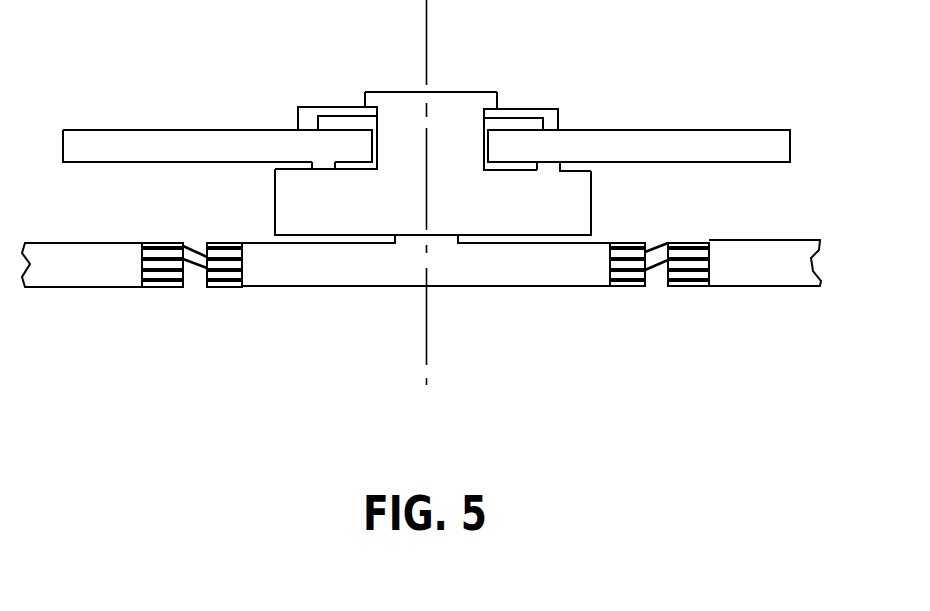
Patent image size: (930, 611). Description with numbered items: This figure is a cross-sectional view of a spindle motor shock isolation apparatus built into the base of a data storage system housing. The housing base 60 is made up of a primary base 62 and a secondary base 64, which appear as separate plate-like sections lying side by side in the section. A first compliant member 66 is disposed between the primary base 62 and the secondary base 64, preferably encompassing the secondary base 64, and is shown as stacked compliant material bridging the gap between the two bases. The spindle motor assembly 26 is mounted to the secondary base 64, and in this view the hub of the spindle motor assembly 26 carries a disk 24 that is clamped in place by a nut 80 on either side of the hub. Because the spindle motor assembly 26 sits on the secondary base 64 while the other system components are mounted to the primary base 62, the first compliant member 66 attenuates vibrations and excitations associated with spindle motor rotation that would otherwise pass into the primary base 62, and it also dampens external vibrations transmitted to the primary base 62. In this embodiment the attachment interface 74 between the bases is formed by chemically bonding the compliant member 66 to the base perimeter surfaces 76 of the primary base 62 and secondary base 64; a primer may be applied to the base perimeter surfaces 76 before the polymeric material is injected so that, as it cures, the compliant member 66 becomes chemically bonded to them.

The disk 24 is at (120, 129).
The spindle motor assembly 26 is at (477, 92).
The clamp nut 80 is at (557, 109).
The housing base 60 is at (428, 261).
The primary base 62 is at (43, 283).
The secondary base 64 is at (344, 288).
The first compliant member 66 is at (225, 288).
The attachment interface 74 is at (153, 241).
The base perimeter surfaces 76 is at (142, 262).